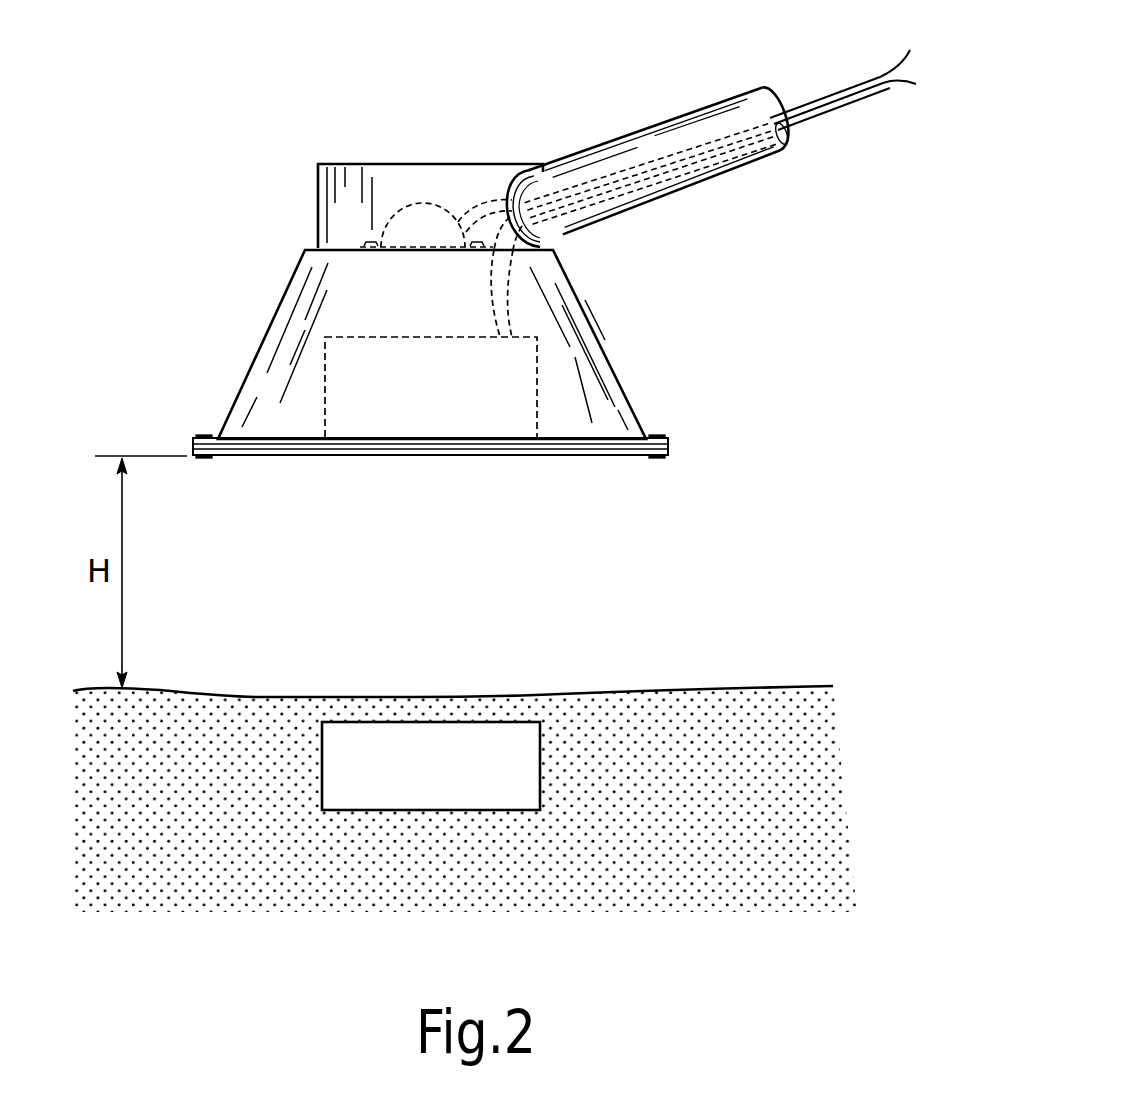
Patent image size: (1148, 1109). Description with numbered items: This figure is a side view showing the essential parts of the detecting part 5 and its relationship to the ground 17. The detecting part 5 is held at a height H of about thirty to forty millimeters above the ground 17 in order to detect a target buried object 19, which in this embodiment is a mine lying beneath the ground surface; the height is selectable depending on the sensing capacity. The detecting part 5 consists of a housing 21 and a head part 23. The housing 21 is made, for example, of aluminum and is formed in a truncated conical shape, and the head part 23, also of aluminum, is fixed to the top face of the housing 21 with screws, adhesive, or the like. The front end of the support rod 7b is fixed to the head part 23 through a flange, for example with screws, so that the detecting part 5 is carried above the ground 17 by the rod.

The detecting part 5 is at (554, 236).
The support rod 7b is at (706, 111).
The ground 17 is at (757, 687).
The target buried object 19 is at (500, 741).
The housing 21 is at (600, 349).
The head part 23 is at (442, 171).